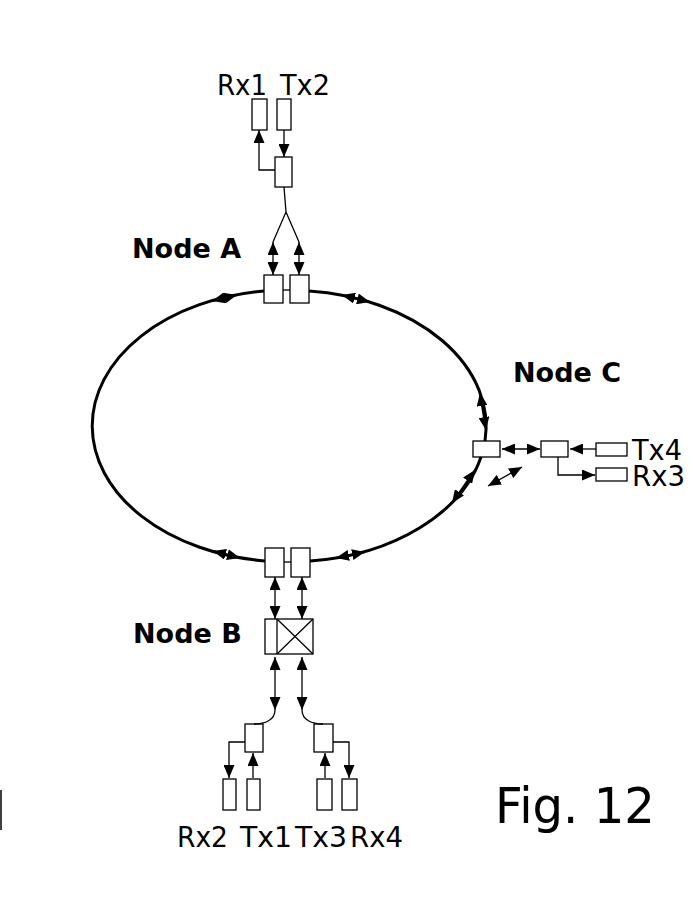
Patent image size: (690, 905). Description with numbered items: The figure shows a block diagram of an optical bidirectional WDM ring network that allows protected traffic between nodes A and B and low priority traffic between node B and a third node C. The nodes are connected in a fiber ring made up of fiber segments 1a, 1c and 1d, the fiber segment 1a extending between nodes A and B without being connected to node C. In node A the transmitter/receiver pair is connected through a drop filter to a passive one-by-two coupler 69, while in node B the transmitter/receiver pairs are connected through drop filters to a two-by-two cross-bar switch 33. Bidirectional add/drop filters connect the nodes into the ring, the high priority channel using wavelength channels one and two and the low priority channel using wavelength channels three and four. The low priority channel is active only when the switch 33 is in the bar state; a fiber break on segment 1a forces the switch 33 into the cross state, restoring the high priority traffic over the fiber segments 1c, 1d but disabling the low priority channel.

The fiber segment 1a is at (93, 425).
The fiber segment 1c is at (413, 532).
The fiber segment 1d is at (440, 339).
The 2×2 cross-bar switch 33 is at (313, 637).
The 1×2 coupler 69 is at (286, 212).